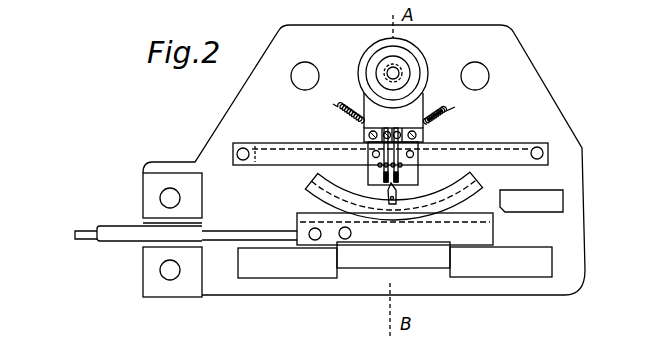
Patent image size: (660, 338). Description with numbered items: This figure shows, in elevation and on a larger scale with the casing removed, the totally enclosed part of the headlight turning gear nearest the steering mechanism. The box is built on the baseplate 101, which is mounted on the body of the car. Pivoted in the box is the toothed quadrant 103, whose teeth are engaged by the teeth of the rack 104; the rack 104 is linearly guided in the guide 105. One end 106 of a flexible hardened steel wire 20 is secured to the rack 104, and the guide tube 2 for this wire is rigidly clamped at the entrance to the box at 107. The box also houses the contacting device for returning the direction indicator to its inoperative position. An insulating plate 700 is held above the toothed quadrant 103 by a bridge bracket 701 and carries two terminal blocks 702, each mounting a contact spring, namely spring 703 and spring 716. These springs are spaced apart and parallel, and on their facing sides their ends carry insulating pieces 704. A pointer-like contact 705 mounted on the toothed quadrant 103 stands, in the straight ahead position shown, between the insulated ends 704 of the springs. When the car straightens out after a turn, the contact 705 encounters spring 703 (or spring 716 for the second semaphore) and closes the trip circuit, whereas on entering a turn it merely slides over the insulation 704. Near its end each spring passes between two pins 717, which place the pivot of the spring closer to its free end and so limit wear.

The guide tube 2 is at (128, 241).
The flexible hardened steel wire 20 is at (88, 240).
The baseplate 101 is at (568, 151).
The toothed quadrant 103 is at (457, 187).
The rack 104 is at (432, 230).
The guide 105 is at (320, 246).
The end of wire 106 is at (278, 233).
The clamp 107 is at (143, 217).
The insulating plate 700 is at (364, 152).
The bridge bracket 701 is at (543, 158).
The terminal block 702 is at (410, 123).
The contact spring 703 is at (403, 150).
The insulating piece 704 is at (372, 180).
The pointer-like contact 705 is at (392, 200).
The contact spring 716 is at (383, 166).
The pins 717 is at (386, 170).